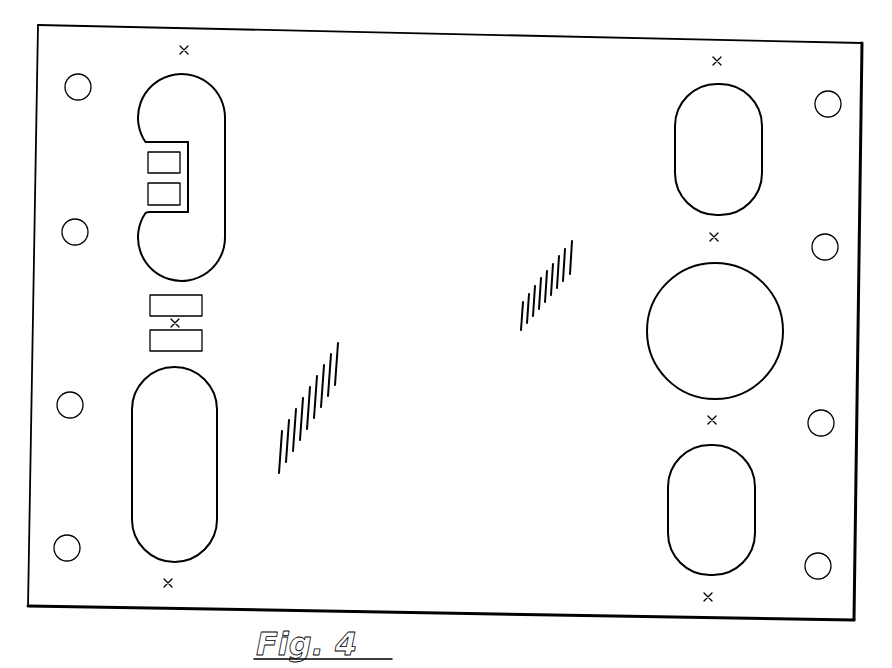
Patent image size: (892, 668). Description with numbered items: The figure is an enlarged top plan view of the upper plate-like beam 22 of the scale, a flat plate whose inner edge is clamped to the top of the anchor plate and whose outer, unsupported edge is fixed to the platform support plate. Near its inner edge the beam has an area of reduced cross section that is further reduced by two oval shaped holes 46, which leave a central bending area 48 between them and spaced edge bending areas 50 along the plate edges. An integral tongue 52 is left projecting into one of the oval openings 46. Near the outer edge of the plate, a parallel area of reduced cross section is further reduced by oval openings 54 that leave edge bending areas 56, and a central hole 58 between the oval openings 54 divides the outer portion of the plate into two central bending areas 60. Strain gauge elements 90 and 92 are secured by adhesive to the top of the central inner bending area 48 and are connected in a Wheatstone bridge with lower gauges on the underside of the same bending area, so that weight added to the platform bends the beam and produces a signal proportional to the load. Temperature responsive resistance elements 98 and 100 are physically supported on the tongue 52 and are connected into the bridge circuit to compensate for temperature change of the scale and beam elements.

The upper plate-like beam 22 is at (544, 597).
The oval shaped holes 46 is at (226, 103).
The central bending area 48 is at (166, 324).
The edge bending areas 50 is at (194, 50).
The integral tongue 52 is at (190, 210).
The oval openings 54 is at (674, 149).
The edge bending areas 56 is at (708, 63).
The central hole 58 is at (647, 338).
The central bending areas 60 is at (705, 236).
The strain gauge element 90 is at (198, 308).
The strain gauge element 92 is at (198, 341).
The temperature responsive resistance element 98 is at (174, 166).
The temperature responsive resistance element 100 is at (175, 195).